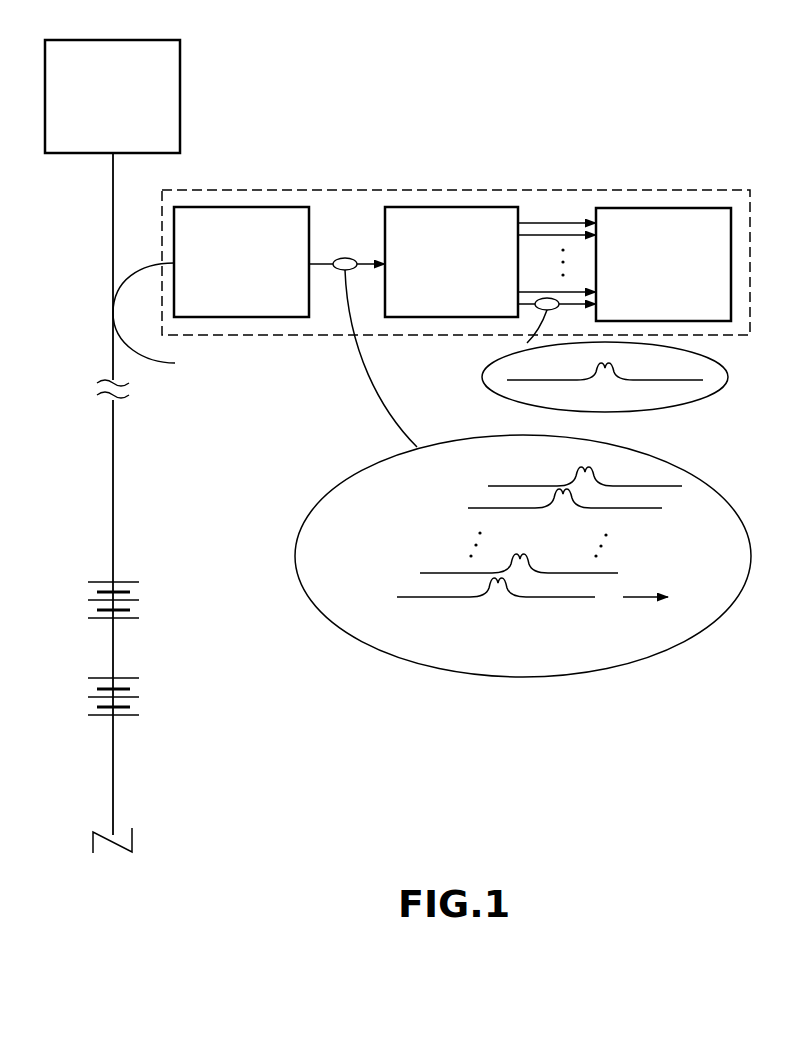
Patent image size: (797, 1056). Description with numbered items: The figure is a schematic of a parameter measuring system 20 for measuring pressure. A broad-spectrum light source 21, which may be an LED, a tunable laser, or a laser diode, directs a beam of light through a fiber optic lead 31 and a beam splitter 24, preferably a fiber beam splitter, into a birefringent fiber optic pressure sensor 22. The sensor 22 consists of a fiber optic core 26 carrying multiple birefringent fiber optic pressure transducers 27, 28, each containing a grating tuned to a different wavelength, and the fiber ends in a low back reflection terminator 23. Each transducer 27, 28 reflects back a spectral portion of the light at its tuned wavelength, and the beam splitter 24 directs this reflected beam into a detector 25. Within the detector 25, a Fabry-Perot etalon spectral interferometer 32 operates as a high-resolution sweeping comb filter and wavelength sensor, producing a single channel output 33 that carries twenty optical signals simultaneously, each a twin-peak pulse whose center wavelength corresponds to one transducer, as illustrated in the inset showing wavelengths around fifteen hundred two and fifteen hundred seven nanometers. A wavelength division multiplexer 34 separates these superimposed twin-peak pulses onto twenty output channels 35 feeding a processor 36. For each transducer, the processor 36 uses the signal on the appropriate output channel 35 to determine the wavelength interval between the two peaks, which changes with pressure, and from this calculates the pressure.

The parameter measuring system 20 is at (425, 78).
The broad-spectrum light source 21 is at (107, 40).
The birefringent fiber optic pressure sensor 22 is at (192, 652).
The low back reflection terminator 23 is at (132, 840).
The beam splitter 24 is at (113, 312).
The detector 25 is at (353, 190).
The fiber optic core 26 is at (113, 512).
The birefringent fiber optic pressure transducer 27 is at (167, 562).
The birefringent fiber optic pressure transducer 28 is at (155, 705).
The fiber optic lead 31 is at (113, 205).
The Fabry-Perot etalon spectral interferometer (FPI) 32 is at (240, 207).
The single channel output 33 is at (320, 264).
The wavelength division multiplexer (WDM) 34 is at (452, 207).
The output channels 35 is at (532, 235).
The processor 36 is at (663, 208).